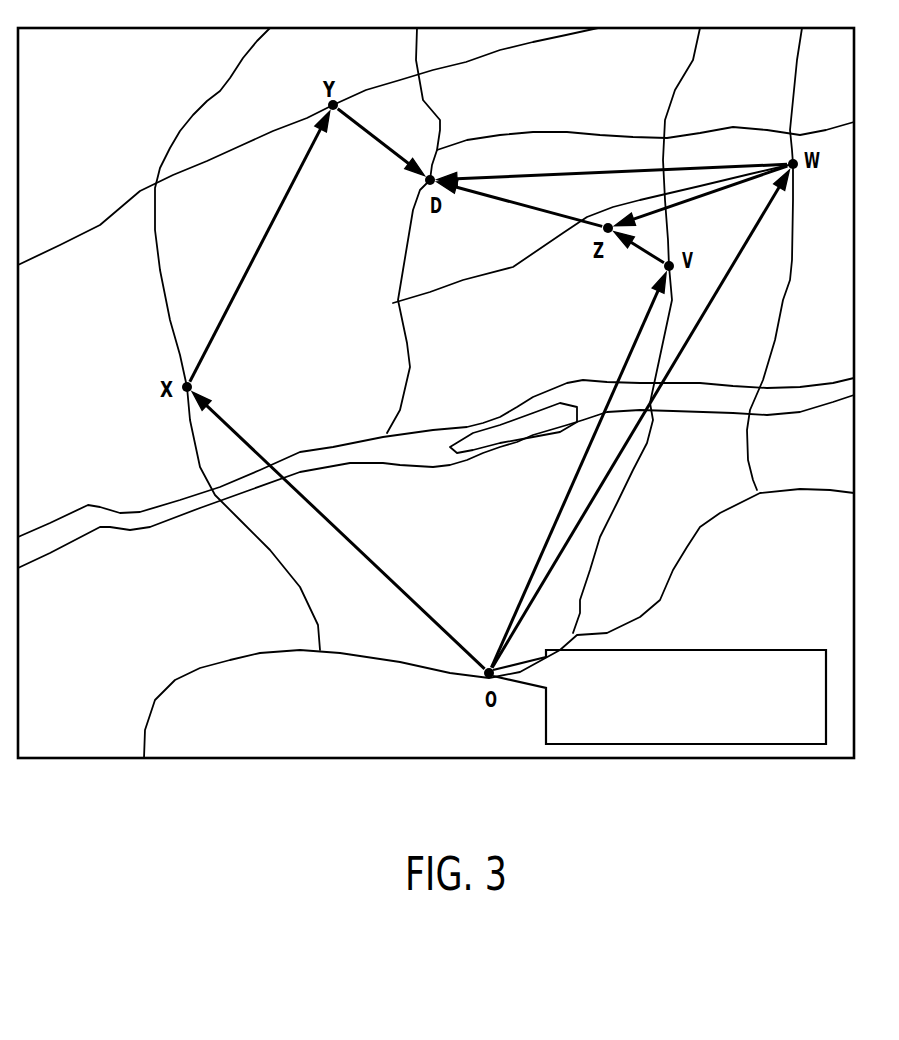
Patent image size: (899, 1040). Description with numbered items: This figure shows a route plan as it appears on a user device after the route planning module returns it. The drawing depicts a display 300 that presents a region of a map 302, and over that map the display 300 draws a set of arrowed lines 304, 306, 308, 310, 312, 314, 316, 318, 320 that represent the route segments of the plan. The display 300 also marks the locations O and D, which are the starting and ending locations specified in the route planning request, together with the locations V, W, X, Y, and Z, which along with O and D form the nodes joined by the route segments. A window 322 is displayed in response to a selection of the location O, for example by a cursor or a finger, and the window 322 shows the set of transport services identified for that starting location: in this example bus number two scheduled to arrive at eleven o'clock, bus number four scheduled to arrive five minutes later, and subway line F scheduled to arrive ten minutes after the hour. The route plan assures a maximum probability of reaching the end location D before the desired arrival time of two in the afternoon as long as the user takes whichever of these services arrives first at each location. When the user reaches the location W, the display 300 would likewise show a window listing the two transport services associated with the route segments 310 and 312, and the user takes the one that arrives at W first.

The display 300 is at (795, 758).
The map 302 is at (90, 722).
The arrowed line 304 is at (368, 563).
The arrowed line 306 is at (568, 493).
The arrowed line 308 is at (690, 341).
The route segment 310 is at (710, 195).
The route segment 312 is at (703, 167).
The arrowed line 314 is at (644, 253).
The arrowed line 316 is at (511, 209).
The arrowed line 318 is at (252, 267).
The arrowed line 320 is at (367, 136).
The window 322 is at (752, 650).